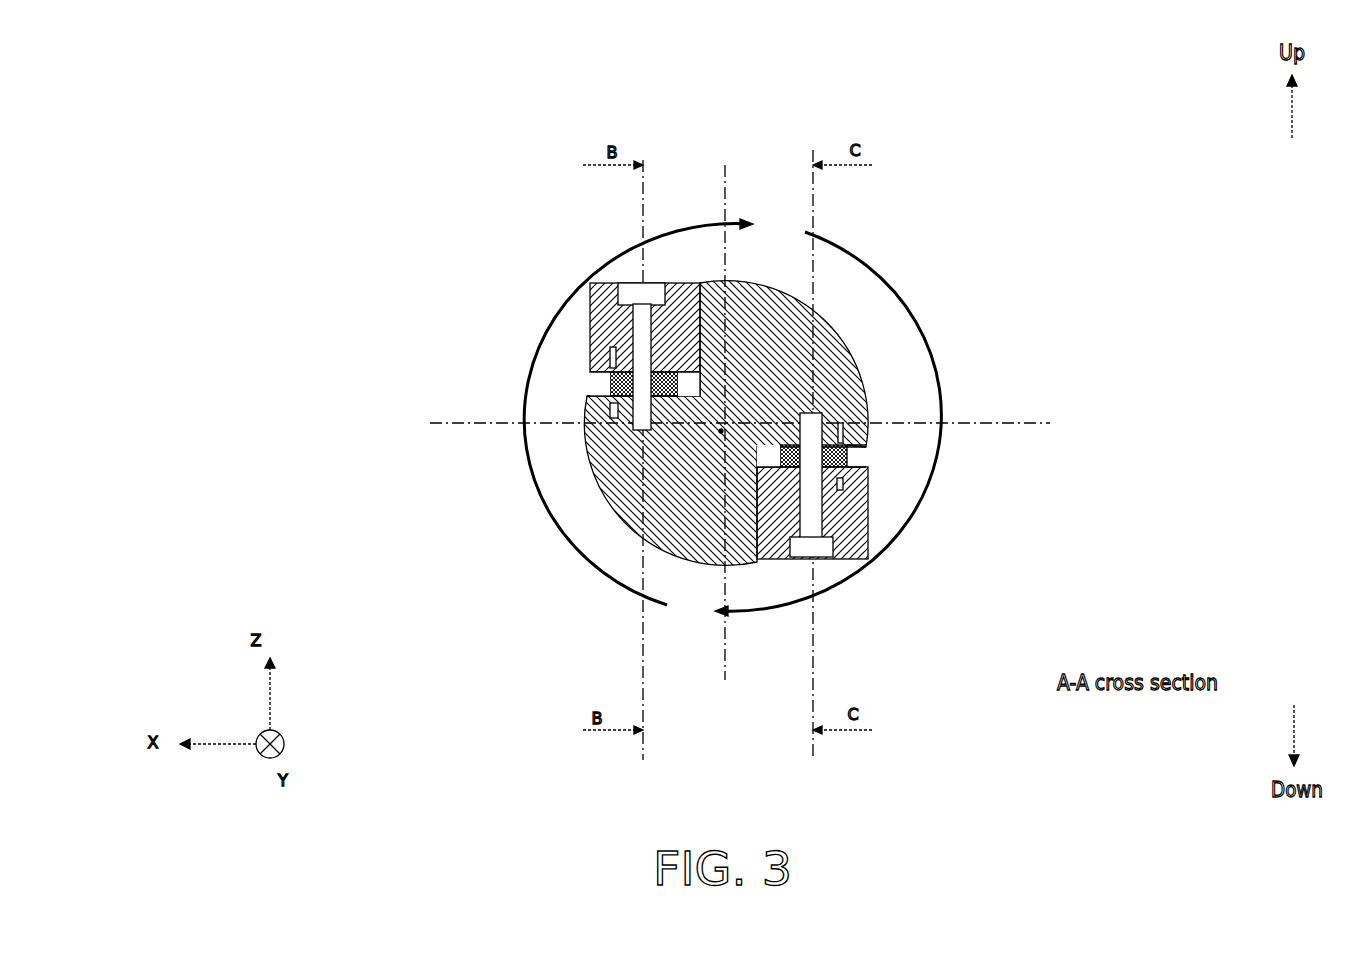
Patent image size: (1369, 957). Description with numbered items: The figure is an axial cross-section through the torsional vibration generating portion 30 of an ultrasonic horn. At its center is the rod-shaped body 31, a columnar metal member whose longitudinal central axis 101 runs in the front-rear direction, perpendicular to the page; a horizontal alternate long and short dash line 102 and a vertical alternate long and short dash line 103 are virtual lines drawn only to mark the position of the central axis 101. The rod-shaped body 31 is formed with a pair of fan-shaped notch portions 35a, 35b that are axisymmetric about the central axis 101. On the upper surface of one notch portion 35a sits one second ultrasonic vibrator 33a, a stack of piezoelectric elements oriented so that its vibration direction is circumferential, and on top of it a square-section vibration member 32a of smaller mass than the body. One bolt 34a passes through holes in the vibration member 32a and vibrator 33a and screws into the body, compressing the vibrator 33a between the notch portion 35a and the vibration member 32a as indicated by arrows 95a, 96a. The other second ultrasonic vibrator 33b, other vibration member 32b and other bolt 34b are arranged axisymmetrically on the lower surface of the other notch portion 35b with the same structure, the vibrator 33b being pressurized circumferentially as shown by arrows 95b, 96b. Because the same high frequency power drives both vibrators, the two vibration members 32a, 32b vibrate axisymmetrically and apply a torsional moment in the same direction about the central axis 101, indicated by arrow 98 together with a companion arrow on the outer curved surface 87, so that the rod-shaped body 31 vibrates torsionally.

The torsional vibration generating portion 30 is at (281, 186).
The rod-shaped body 31 is at (848, 342).
The one vibration member 32a is at (597, 284).
The other vibration member 32b is at (856, 560).
The one second ultrasonic vibrator 33a is at (605, 383).
The other second ultrasonic vibrator 33b is at (866, 460).
The one bolt 34a is at (630, 283).
The other bolt 34b is at (808, 556).
The one notch portion 35a is at (605, 388).
The other notch portion 35b is at (864, 455).
The outer peripheral surface 87 is at (918, 314).
The arrow 95a is at (582, 410).
The arrow 95b is at (868, 435).
The arrow 96a is at (590, 345).
The arrow 96b is at (870, 497).
The arrow 98 is at (546, 519).
The central axis 101 is at (720, 432).
The alternate long and short dash line 102 is at (1030, 423).
The alternate long and short dash line 103 is at (725, 615).